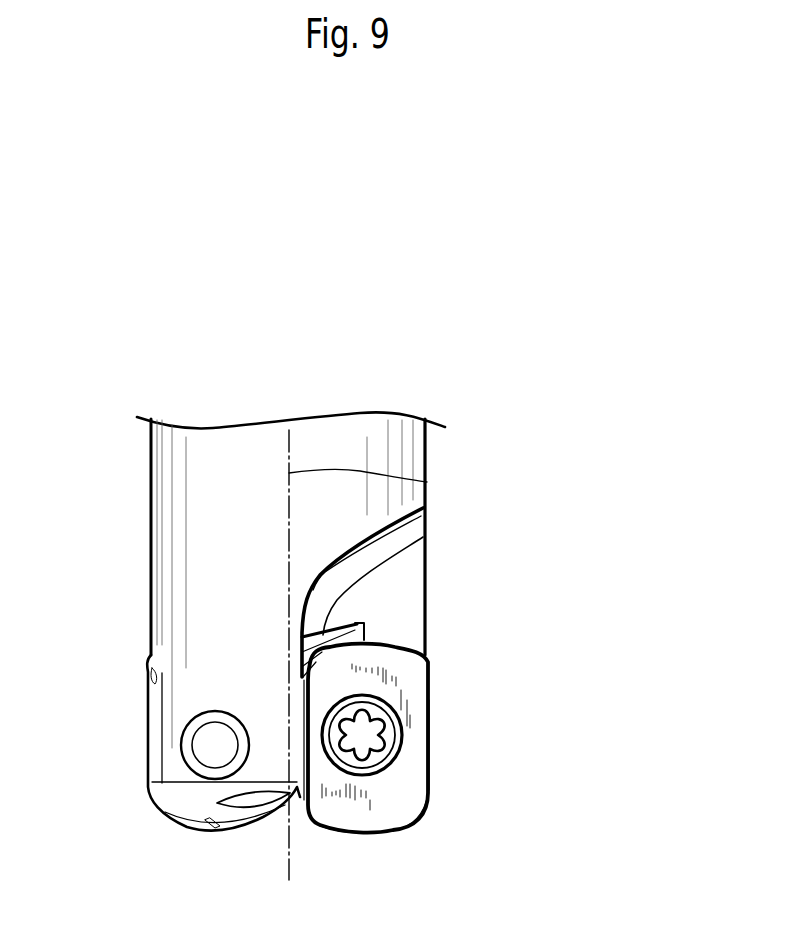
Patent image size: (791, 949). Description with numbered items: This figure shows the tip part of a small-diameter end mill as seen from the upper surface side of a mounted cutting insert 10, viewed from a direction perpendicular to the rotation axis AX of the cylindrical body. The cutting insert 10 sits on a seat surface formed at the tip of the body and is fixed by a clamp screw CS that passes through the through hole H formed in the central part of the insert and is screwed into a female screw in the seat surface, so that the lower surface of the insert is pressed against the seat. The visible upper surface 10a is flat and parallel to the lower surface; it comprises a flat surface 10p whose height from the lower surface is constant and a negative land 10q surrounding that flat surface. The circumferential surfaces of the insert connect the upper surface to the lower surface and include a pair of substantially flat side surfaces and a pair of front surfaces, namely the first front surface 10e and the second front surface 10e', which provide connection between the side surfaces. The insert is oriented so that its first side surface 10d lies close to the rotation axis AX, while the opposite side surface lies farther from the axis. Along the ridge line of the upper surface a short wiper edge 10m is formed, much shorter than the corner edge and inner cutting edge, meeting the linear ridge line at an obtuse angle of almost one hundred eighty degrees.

The cutting insert 10 is at (135, 755).
The rotation axis AX is at (427, 482).
The second front surface 10e' is at (414, 592).
The first side surface 10d is at (303, 723).
The flat surface 10p is at (403, 683).
The upper surface 10a is at (368, 738).
The clamp screw CS is at (380, 722).
The through hole H is at (405, 742).
The wiper edge 10m is at (428, 770).
The negative land 10q is at (426, 803).
The first front surface 10e is at (402, 867).